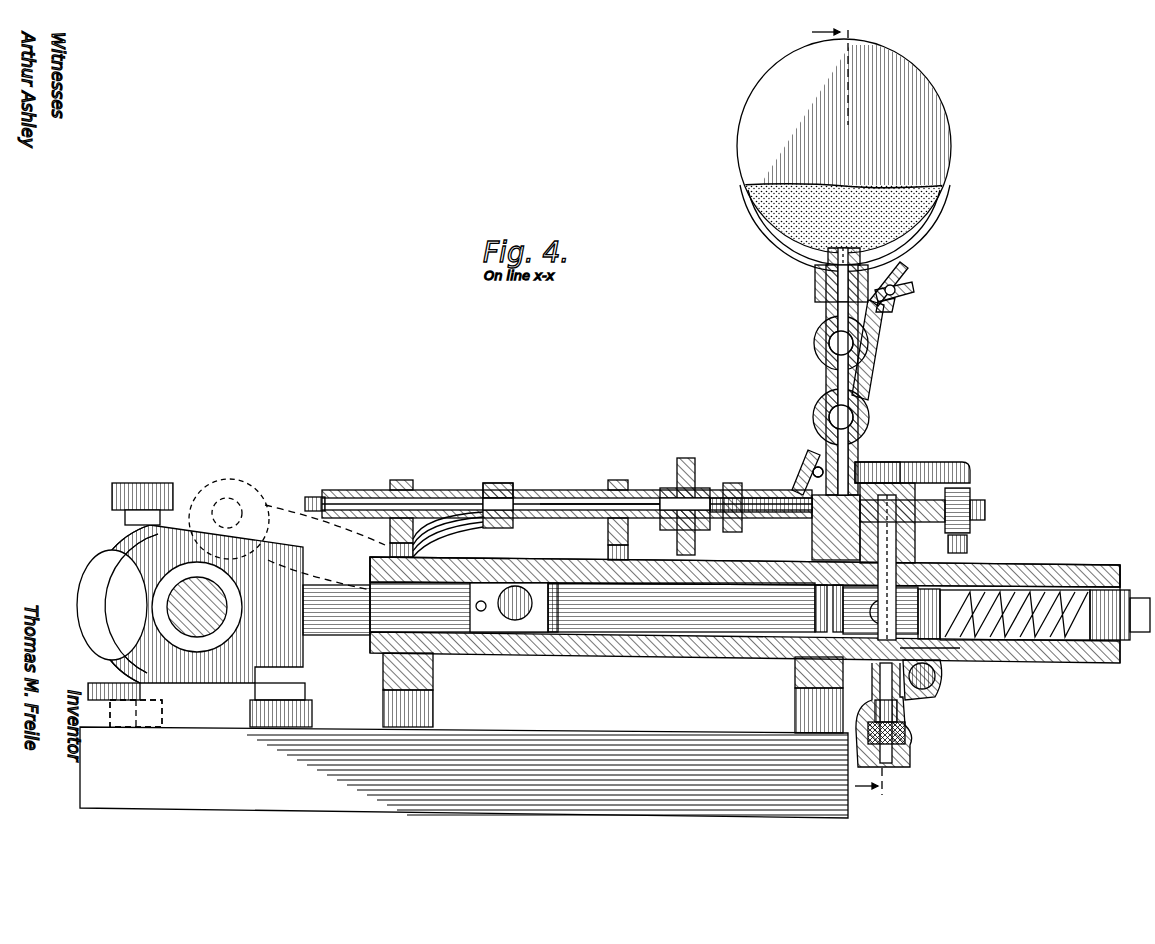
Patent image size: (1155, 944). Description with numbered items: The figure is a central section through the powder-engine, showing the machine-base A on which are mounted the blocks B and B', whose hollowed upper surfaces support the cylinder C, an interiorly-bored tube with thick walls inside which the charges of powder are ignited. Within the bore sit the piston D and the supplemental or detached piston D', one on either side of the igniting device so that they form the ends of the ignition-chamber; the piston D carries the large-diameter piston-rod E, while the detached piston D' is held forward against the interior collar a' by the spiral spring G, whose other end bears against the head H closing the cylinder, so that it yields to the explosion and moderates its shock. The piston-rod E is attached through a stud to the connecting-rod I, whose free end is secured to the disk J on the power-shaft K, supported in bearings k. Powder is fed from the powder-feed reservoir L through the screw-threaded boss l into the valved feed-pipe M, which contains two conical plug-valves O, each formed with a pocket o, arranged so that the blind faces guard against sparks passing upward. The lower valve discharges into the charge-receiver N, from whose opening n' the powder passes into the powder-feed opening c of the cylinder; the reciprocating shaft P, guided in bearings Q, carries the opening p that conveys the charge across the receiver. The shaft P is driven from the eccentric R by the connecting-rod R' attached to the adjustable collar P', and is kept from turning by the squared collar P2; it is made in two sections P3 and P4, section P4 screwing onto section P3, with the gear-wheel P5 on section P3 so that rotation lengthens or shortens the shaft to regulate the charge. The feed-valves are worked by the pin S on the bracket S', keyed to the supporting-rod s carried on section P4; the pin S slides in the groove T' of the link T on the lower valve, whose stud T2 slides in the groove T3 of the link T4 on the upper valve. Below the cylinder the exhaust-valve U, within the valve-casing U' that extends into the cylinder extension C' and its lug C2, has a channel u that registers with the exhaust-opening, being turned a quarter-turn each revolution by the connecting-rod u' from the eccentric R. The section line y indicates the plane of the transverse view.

The machine-base A is at (464, 772).
The block B is at (414, 690).
The block B' is at (805, 695).
The cylinder C is at (745, 602).
The cylinder extension C' is at (745, 634).
The lug C2 is at (938, 688).
The powder-feed opening c is at (896, 560).
The piston D is at (833, 639).
The supplemental or detached piston D' is at (960, 587).
The piston-rod E is at (660, 620).
The spiral spring G is at (1043, 650).
The head H is at (1104, 655).
The connecting-rod I is at (325, 547).
The disk J is at (225, 519).
The power-shaft K is at (185, 610).
The bearings k is at (165, 712).
The powder-feed reservoir L is at (940, 186).
The screw-threaded boss l is at (862, 262).
The valved feed-pipe M is at (829, 297).
The charge-receiver N is at (812, 547).
The conical plug-valve O is at (866, 352).
The pocket o is at (864, 362).
The reciprocating shaft P is at (607, 481).
The adjustable collar P' is at (499, 493).
The squared collar P2 is at (464, 490).
The shaft section P3 is at (550, 498).
The shaft section P4 is at (750, 498).
The gear-wheel P5 is at (690, 466).
The opening p is at (872, 470).
The bearing Q is at (509, 510).
The eccentric R is at (205, 603).
The connecting-rod R' is at (448, 534).
The pin S is at (805, 455).
The bracket S' is at (912, 462).
The supporting-rod s is at (968, 500).
The opening n' is at (991, 505).
The link T is at (881, 350).
The groove T' is at (800, 473).
The stud T2 is at (912, 292).
The groove T3 is at (905, 268).
The link T4 is at (895, 312).
The exhaust-valve U is at (889, 718).
The valve-casing U' is at (905, 720).
The channel u is at (901, 737).
The connecting-rod u' is at (511, 637).
The passage a' is at (945, 671).
The section line y is at (855, 414).